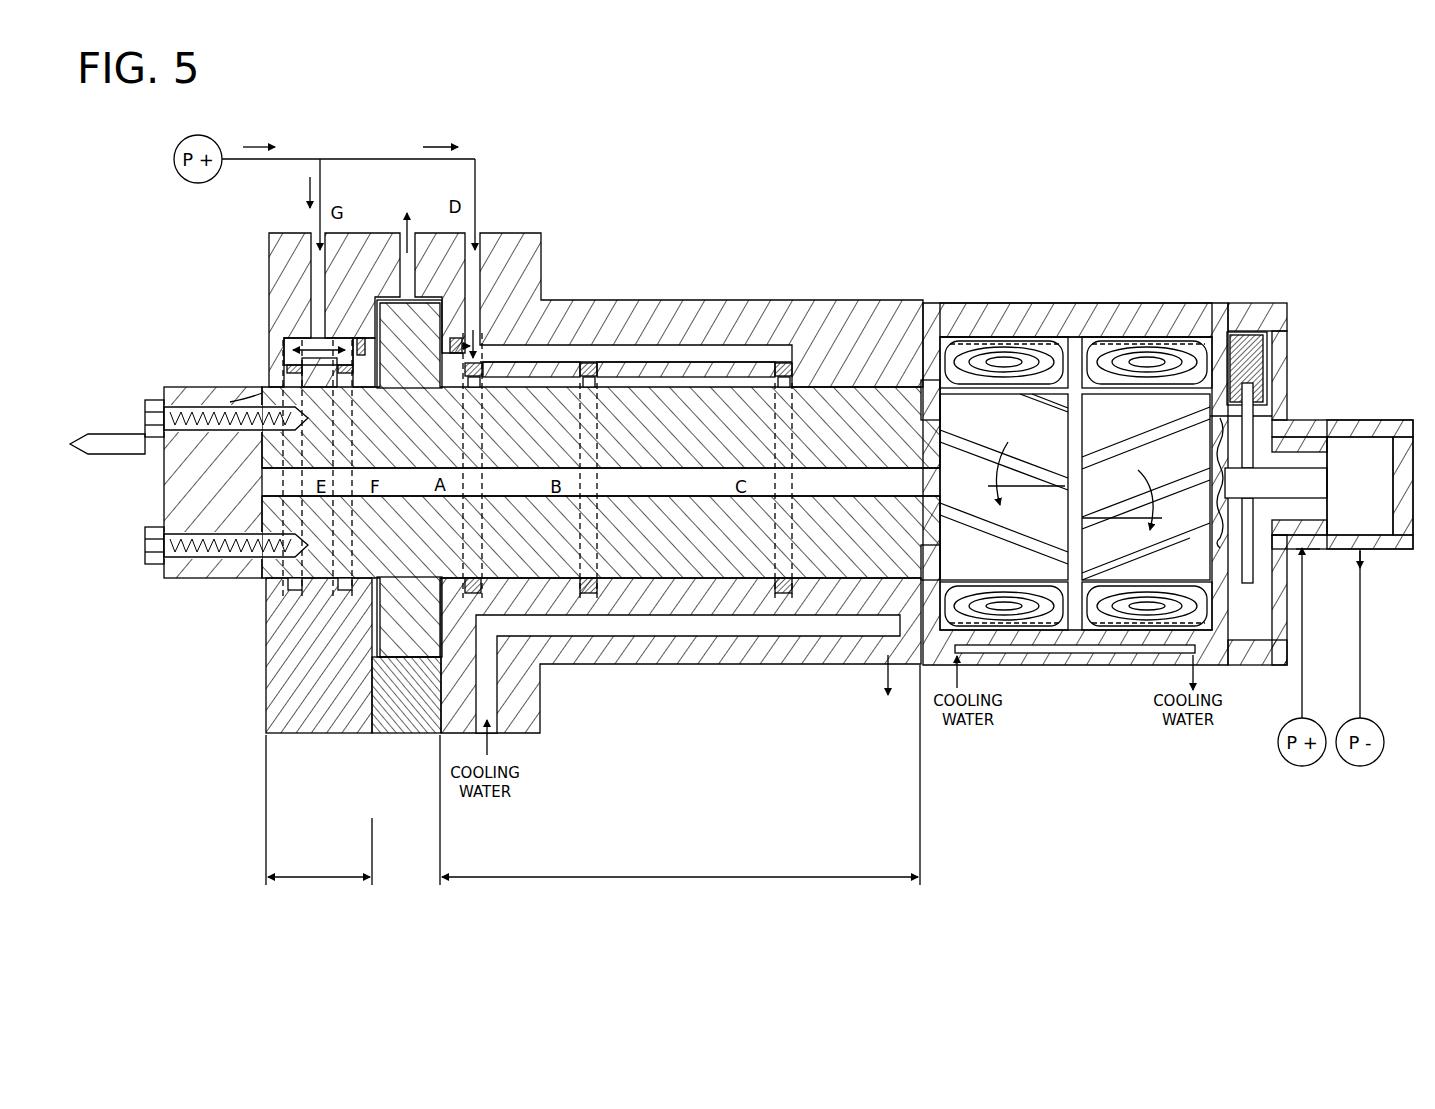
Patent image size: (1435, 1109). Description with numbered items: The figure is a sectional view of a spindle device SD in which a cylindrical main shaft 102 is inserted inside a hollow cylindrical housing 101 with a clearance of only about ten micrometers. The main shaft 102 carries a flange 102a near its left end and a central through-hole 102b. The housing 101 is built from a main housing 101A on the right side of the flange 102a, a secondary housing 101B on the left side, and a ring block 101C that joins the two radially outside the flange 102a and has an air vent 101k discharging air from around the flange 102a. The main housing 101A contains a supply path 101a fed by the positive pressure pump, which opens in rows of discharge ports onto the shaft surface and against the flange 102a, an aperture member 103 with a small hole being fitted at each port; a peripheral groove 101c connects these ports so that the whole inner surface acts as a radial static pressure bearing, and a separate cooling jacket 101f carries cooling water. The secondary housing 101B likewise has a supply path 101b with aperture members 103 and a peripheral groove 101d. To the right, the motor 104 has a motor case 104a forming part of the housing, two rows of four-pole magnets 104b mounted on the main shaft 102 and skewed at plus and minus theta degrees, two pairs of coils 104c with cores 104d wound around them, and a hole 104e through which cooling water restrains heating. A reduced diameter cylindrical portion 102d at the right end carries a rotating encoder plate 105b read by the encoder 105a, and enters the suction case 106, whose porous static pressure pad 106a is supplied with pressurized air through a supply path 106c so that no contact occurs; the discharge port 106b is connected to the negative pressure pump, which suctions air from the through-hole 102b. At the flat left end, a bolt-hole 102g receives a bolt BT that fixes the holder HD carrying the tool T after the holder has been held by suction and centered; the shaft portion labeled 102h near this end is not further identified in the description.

The housing 101 is at (554, 503).
The supply path 101a is at (490, 280).
The supply path 101b is at (318, 268).
The peripheral groove 101c is at (472, 600).
The peripheral groove 101d is at (270, 640).
The cooling jacket 101f is at (705, 635).
The air vent 101k is at (420, 270).
The main housing 101A is at (642, 685).
The secondary housing 101B is at (266, 735).
The ring block 101C is at (372, 735).
The main shaft 102 is at (640, 600).
The flange 102a is at (388, 300).
The through-hole 102b is at (848, 495).
The reduced diameter cylindrical portion 102d is at (1262, 540).
The bolt-hole 102g is at (245, 405).
The shaft bore 102h is at (255, 505).
The aperture member 103 is at (340, 362).
The motor 104 is at (1053, 467).
The motor case 104a is at (1143, 305).
The magnets 104b is at (1045, 540).
The coils 104c is at (965, 345).
The cores 104d is at (958, 380).
The hole 104e is at (1063, 655).
The encoder 105a is at (1250, 338).
The encoder plate 105b is at (1287, 360).
The suction case 106 is at (1393, 422).
The static pressure pad 106a is at (1305, 440).
The discharge port 106b is at (1360, 535).
The supply path 106c is at (1310, 550).
The bolt BT is at (158, 398).
The holder HD is at (163, 478).
The tool T is at (115, 433).
The spindle device SD is at (783, 242).